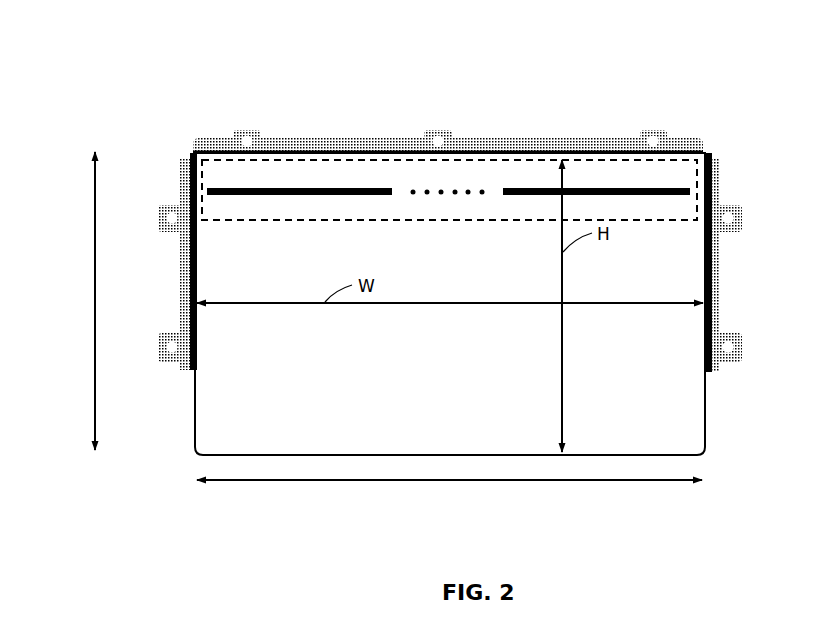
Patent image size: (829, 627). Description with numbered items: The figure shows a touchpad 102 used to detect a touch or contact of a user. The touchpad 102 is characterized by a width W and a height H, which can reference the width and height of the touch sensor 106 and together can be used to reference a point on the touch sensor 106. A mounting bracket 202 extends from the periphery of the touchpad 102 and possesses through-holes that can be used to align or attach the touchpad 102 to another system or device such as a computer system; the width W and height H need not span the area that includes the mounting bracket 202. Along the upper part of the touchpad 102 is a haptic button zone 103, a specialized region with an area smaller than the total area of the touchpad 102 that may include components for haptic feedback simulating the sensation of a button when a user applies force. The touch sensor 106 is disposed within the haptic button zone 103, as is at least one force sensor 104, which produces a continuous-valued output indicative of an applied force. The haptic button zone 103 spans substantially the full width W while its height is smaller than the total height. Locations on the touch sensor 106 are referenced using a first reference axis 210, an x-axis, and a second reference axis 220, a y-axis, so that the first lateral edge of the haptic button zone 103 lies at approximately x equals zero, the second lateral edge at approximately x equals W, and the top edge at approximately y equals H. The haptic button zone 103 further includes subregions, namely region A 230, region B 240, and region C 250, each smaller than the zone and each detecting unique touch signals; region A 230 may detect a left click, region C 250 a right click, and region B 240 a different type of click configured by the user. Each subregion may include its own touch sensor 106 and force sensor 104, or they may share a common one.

The touchpad 102 is at (428, 60).
The haptic button zone 103 is at (698, 160).
The force sensor 104 is at (533, 175).
The touch sensor 106 is at (367, 166).
The mounting bracket 202 is at (443, 136).
The first reference axis 210 is at (588, 482).
The second reference axis 220 is at (93, 282).
The region A 230 is at (278, 198).
The region B 240 is at (433, 198).
The region C 250 is at (663, 197).